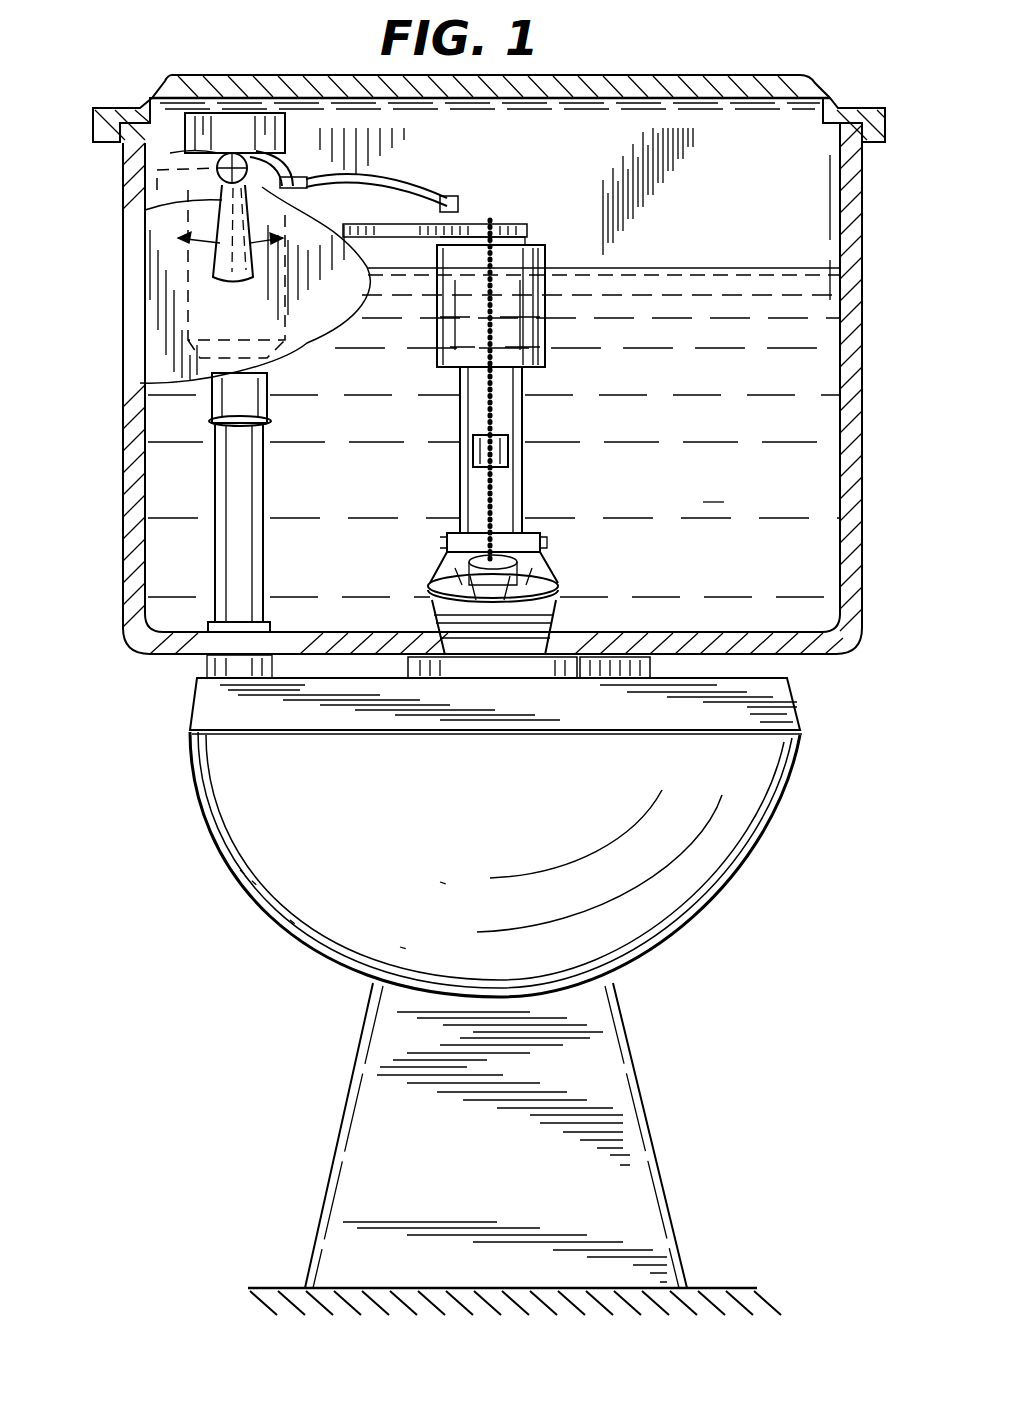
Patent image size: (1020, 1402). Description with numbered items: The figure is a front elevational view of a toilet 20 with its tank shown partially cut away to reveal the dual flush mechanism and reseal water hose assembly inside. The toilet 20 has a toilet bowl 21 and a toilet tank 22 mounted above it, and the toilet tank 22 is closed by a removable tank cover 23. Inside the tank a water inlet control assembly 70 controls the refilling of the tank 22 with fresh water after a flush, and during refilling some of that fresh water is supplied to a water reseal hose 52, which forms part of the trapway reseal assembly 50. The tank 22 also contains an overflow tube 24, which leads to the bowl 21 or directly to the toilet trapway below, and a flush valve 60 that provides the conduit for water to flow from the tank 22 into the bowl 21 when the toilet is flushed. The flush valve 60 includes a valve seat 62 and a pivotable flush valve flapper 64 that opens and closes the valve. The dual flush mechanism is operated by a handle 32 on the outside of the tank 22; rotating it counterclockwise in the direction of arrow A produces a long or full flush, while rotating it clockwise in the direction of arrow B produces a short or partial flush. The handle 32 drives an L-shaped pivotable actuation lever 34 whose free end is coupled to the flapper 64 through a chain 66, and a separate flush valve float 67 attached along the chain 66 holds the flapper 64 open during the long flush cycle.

The toilet 20 is at (698, 46).
The toilet bowl 21 is at (730, 885).
The toilet tank 22 is at (508, 388).
The removable tank cover 23 is at (310, 74).
The overflow tube 24 is at (524, 468).
The handle 32 is at (165, 192).
The actuation lever 34 is at (412, 240).
The trapway reseal assembly 50 is at (536, 233).
The water reseal hose 52 is at (440, 195).
The flush valve 60 is at (575, 577).
The valve seat 62 is at (557, 592).
The flush valve flapper 64 is at (448, 574).
The chain 66 is at (500, 405).
The flush valve float 67 is at (473, 460).
The water inlet control assembly 70 is at (283, 156).